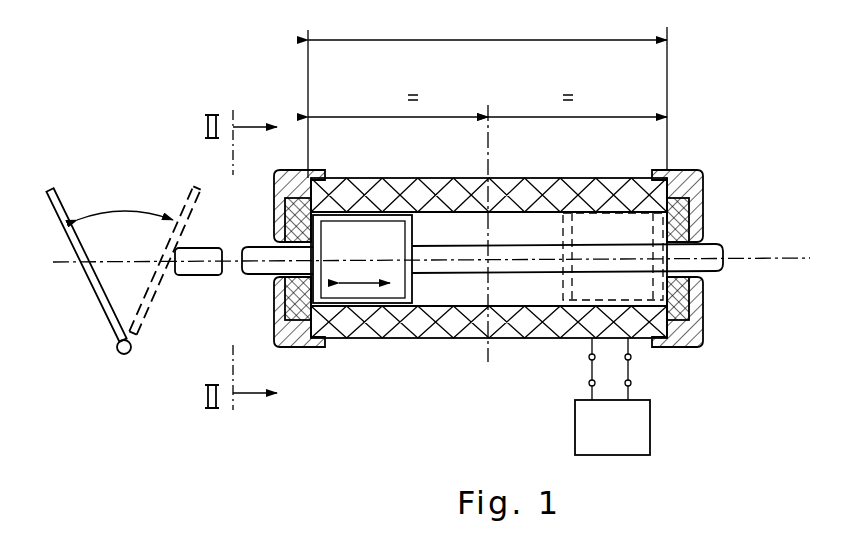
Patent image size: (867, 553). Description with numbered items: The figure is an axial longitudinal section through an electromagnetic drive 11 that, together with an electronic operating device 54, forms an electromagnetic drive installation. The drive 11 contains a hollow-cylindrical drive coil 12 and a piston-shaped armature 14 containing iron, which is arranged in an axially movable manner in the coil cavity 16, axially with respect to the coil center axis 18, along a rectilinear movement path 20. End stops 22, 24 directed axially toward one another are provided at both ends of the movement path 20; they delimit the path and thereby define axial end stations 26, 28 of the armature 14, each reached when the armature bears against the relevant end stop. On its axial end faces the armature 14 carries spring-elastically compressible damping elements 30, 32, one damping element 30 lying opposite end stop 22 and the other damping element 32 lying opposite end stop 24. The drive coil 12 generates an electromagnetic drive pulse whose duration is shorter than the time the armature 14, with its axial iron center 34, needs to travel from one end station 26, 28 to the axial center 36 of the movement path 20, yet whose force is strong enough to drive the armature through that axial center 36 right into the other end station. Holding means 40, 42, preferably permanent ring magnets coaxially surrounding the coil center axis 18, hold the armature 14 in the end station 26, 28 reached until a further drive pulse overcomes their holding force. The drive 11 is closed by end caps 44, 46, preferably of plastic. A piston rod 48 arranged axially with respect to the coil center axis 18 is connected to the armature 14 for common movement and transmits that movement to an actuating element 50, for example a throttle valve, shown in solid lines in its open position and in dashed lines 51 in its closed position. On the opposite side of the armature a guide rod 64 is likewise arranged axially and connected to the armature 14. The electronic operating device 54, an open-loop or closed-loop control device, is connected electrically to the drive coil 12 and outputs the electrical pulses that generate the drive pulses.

The electromagnetic drive 11 is at (692, 77).
The drive coil 12 is at (489, 238).
The armature 14 is at (383, 238).
The coil cavity 16 is at (433, 230).
The coil center axis 18 is at (771, 256).
The movement path 20 is at (437, 38).
The end stop 22 is at (337, 177).
The end stop 24 is at (647, 216).
The end station 26 is at (337, 177).
The end station 28 is at (647, 216).
The damping element 30 is at (337, 342).
The damping element 32 is at (407, 340).
The axial iron center 34 is at (363, 258).
The axial center of the movement path 36 is at (489, 113).
The holding means 40 is at (300, 348).
The holding means 42 is at (675, 318).
The end cap 44 is at (290, 350).
The end cap 46 is at (690, 343).
The piston rod 48 is at (187, 274).
The actuating element 50 is at (63, 195).
The dashed lines 51 is at (182, 205).
The electronic operating device 54 is at (640, 434).
The guide rod 64 is at (708, 248).